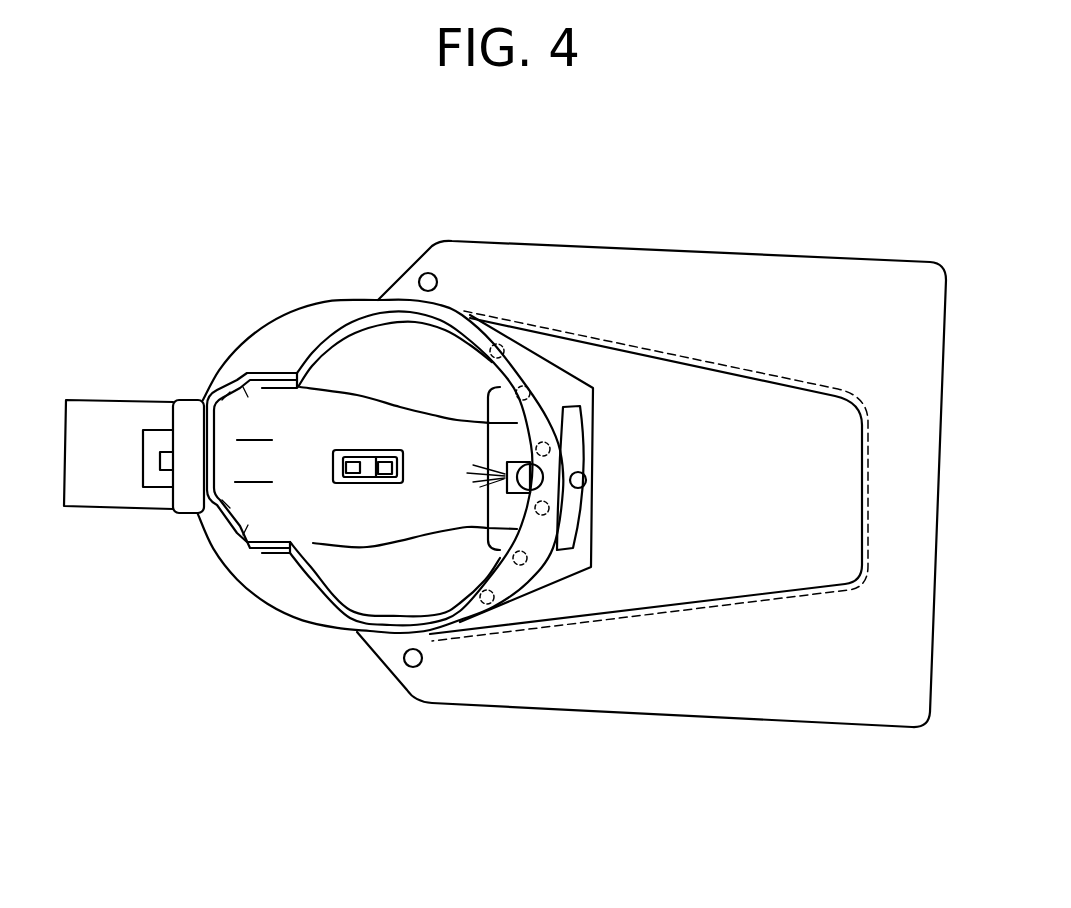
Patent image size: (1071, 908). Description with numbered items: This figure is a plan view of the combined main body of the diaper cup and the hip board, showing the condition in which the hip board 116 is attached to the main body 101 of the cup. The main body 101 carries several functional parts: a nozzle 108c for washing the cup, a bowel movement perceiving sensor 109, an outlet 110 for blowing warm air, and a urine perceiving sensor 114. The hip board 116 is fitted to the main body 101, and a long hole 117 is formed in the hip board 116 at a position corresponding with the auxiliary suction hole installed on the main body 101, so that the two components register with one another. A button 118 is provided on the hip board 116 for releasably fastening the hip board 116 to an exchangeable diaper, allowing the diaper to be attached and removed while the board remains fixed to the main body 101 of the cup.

The main body 101 is at (278, 614).
The nozzle for washing the cup 108c is at (546, 473).
The bowel movement perceiving sensor 109 is at (372, 458).
The outlet for blowing warm air 110 is at (488, 440).
The urine perceiving sensor 114 is at (253, 437).
The hip board 116 is at (728, 252).
The long hole 117 is at (563, 552).
The button 118 is at (428, 272).